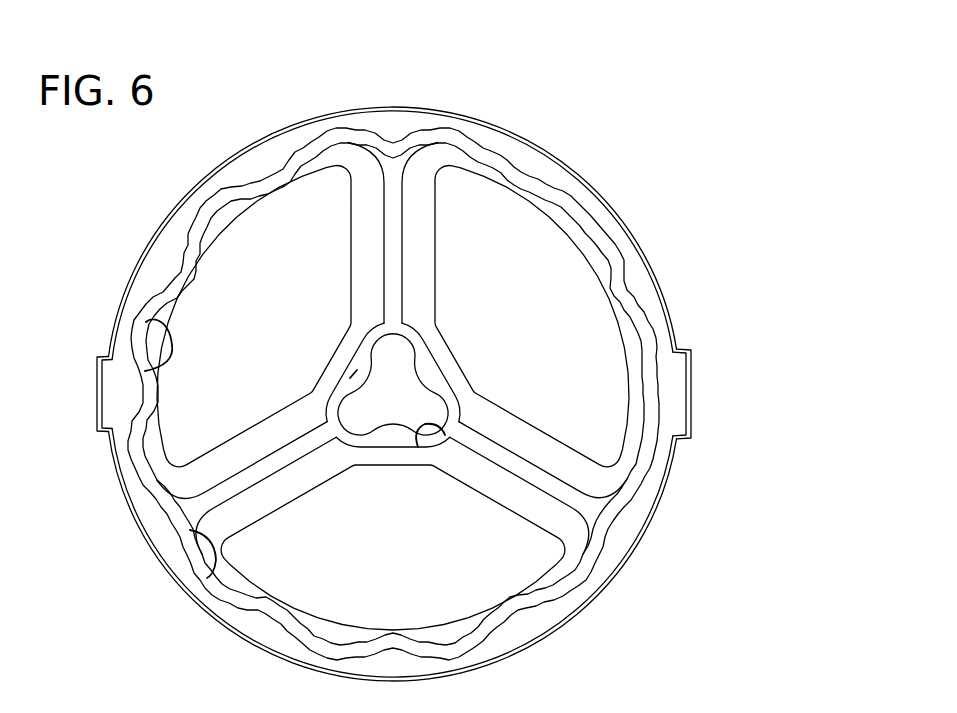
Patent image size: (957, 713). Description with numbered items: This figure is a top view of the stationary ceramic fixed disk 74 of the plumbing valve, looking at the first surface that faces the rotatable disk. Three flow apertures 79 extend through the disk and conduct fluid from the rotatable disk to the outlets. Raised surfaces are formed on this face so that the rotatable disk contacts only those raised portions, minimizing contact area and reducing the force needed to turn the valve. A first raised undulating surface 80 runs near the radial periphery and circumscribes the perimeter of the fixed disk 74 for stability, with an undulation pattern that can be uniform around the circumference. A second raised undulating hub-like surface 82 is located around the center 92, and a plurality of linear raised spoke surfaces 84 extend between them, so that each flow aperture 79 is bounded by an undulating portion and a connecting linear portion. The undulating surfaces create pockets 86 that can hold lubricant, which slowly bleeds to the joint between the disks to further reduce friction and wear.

The fixed disk 74 is at (653, 533).
The flow aperture 79 is at (302, 238).
The first raised undulating surface 80 is at (470, 137).
The second raised undulating hub-like surface 82 is at (328, 411).
The linear raised spoke surface 84 is at (398, 283).
The pocket 86 is at (357, 370).
The center 92 is at (402, 390).